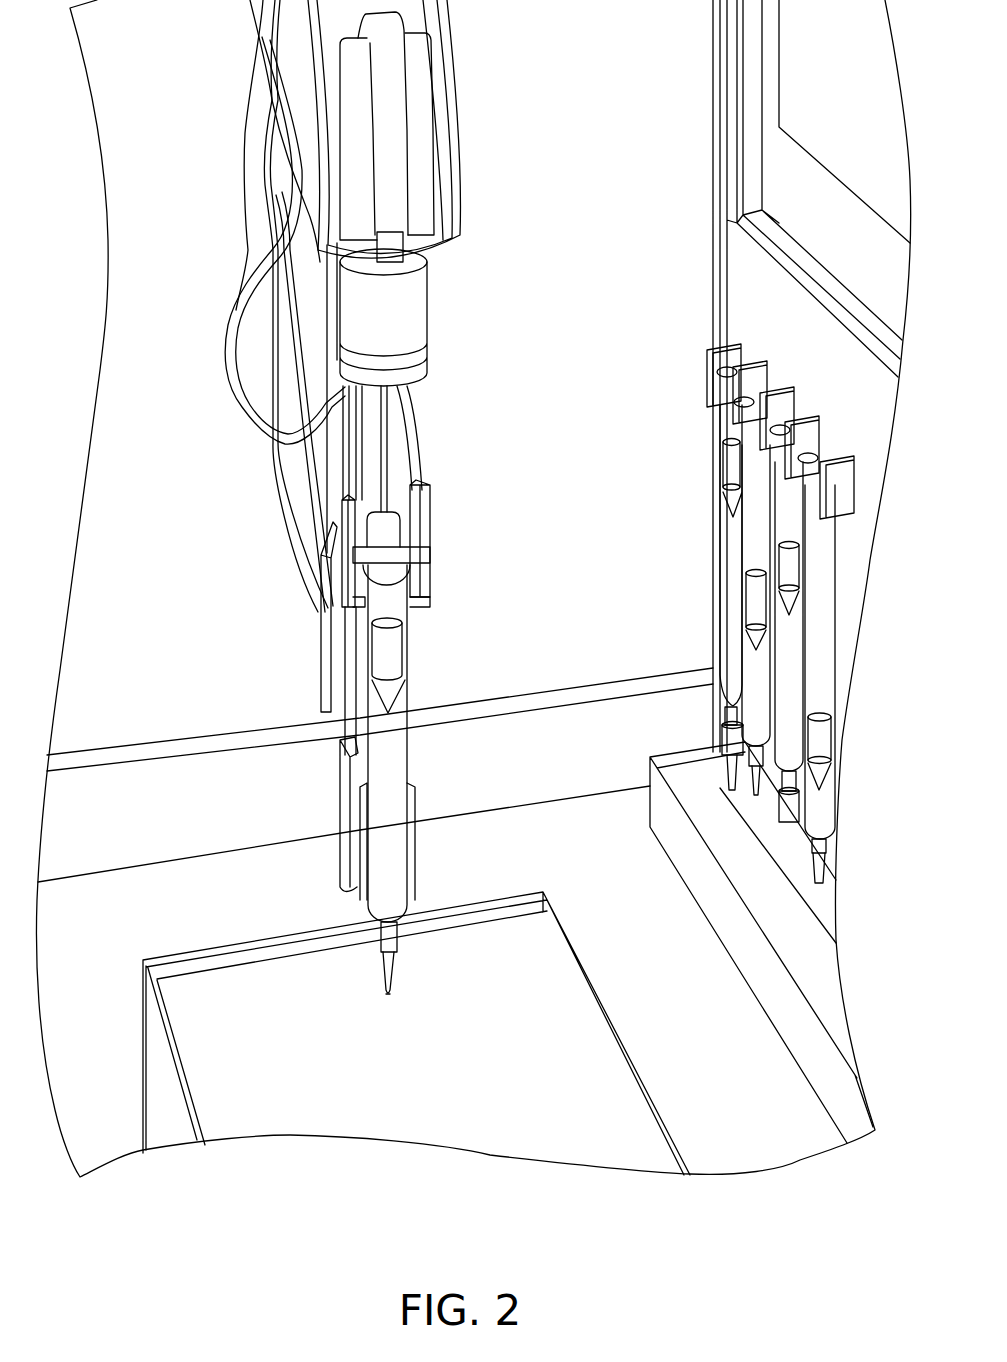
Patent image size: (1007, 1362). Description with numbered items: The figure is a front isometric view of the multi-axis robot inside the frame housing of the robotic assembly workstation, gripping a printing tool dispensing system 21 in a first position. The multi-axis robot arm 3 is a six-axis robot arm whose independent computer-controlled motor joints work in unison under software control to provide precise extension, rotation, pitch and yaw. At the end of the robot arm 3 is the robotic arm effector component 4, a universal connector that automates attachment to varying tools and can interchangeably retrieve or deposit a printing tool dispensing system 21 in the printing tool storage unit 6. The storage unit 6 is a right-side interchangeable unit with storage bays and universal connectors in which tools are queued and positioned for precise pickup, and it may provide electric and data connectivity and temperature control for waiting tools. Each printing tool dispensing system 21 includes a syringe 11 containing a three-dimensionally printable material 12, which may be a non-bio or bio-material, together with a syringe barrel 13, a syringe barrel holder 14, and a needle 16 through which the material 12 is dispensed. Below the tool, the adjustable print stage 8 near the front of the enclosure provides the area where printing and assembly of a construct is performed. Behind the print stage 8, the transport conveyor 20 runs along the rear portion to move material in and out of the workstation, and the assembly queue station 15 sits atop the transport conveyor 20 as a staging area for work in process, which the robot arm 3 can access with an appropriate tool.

The multi-axis robot arm 3 is at (488, 153).
The robotic arm effector component 4 is at (443, 449).
The printing tool storage unit 6 is at (703, 340).
The adjustable print stage 8 is at (218, 934).
The syringe 11 is at (396, 980).
The material 12 is at (381, 1001).
The syringe barrel 13 is at (405, 643).
The syringe barrel holder 14 is at (430, 563).
The assembly queue station 15 is at (510, 770).
The needle 16 is at (398, 766).
The transport conveyor 20 is at (594, 671).
The printing tool dispensing system 21 is at (422, 693).